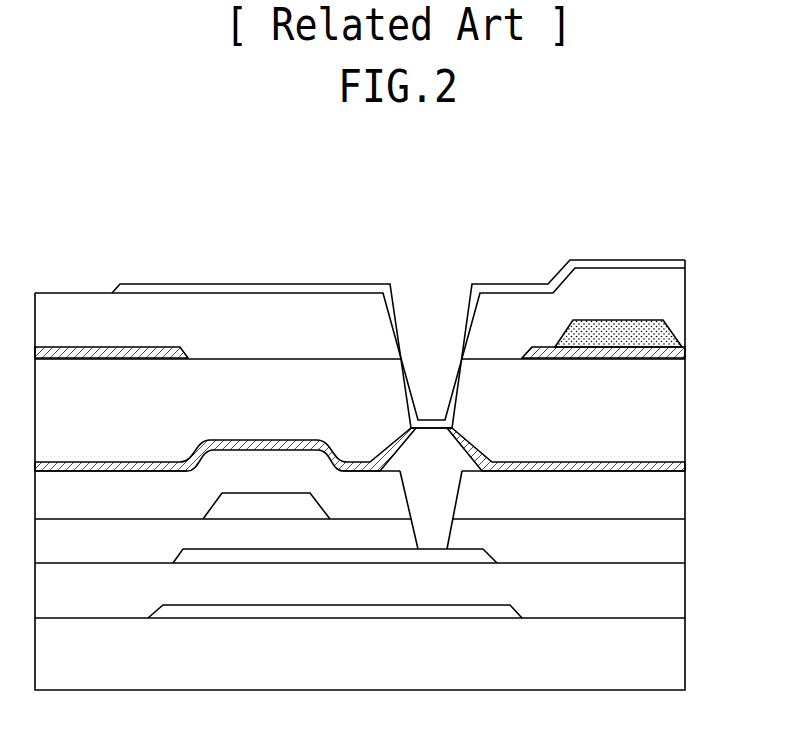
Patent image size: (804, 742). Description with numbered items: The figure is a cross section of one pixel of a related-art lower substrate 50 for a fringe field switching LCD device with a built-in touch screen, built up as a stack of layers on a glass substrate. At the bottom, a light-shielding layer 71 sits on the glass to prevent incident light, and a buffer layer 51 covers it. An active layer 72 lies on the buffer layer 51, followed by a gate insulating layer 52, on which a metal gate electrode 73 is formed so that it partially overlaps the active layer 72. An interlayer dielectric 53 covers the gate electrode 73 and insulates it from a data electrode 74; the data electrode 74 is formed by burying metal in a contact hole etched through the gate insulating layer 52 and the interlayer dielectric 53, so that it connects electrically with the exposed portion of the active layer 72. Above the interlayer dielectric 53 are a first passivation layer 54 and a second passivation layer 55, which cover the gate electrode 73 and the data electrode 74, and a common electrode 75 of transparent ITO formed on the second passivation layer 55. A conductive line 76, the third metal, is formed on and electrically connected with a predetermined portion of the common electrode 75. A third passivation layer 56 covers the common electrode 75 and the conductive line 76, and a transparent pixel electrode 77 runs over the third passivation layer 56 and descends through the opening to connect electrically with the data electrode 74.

The lower substrate 50 is at (419, 215).
The buffer layer 51 is at (676, 592).
The gate insulating layer 52 is at (676, 540).
The interlayer dielectric (ILD) 53 is at (676, 500).
The first passivation layer (PAS0) 54 is at (85, 462).
The second passivation layer (PAS1) 55 is at (676, 417).
The third passivation layer (PAS2) 56 is at (676, 298).
The light-shielding layer 71 is at (513, 613).
The active layer 72 is at (487, 559).
The gate electrode 73 is at (320, 511).
The data electrode 74 is at (432, 432).
The common electrode 75 is at (188, 358).
The conductive line (3rd metal) 76 is at (668, 331).
The pixel electrode 77 is at (676, 265).